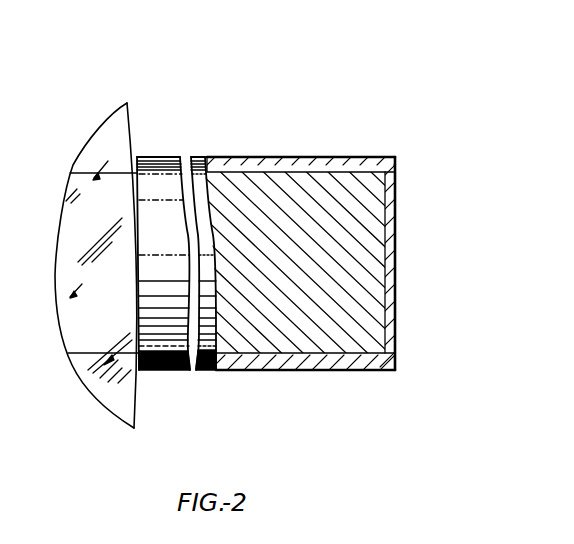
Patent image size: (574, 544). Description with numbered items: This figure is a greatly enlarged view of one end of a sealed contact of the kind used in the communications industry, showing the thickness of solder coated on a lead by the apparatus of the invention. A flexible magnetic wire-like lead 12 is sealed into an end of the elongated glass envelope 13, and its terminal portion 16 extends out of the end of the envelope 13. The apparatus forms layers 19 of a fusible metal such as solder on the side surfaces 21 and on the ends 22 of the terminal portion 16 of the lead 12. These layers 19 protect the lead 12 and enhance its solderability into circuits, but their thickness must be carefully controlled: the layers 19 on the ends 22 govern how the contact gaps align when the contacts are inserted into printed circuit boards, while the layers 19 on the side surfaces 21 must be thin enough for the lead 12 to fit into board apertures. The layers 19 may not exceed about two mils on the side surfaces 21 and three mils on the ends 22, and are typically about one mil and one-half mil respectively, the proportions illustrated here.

The lead 12 is at (172, 157).
The glass envelope 13 is at (118, 145).
The terminal portion 16 is at (173, 371).
The layer 19 is at (299, 256).
The side surface 21 is at (270, 172).
The end 22 is at (389, 330).